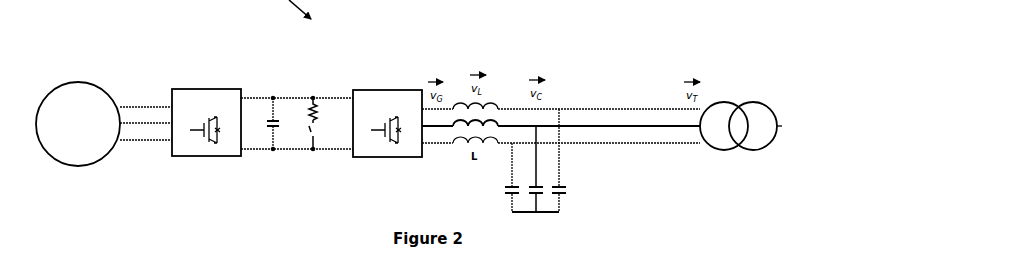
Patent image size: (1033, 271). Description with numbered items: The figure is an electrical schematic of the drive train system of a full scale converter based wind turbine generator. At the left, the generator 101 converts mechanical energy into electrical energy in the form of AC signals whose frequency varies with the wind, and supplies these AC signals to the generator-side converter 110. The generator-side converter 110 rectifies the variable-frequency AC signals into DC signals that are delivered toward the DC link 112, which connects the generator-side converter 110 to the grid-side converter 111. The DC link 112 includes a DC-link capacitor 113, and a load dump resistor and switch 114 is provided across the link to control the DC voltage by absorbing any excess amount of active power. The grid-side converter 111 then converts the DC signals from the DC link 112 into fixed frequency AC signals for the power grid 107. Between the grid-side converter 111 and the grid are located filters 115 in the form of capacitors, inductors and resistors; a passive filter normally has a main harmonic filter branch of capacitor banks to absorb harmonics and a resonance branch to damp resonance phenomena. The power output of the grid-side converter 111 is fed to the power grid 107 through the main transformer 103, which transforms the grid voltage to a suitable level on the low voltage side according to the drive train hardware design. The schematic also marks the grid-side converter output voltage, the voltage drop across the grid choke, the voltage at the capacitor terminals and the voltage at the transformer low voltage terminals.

The generator 101 is at (103, 72).
The generator-side converter 110 is at (217, 89).
The grid-side converter 111 is at (379, 90).
The DC link 112 is at (299, 98).
The DC-link capacitor 113 is at (282, 135).
The load dump resistor and switch 114 is at (314, 119).
The filters 115 is at (547, 108).
The main transformer 103 is at (733, 103).
The power grid 107 is at (778, 120).